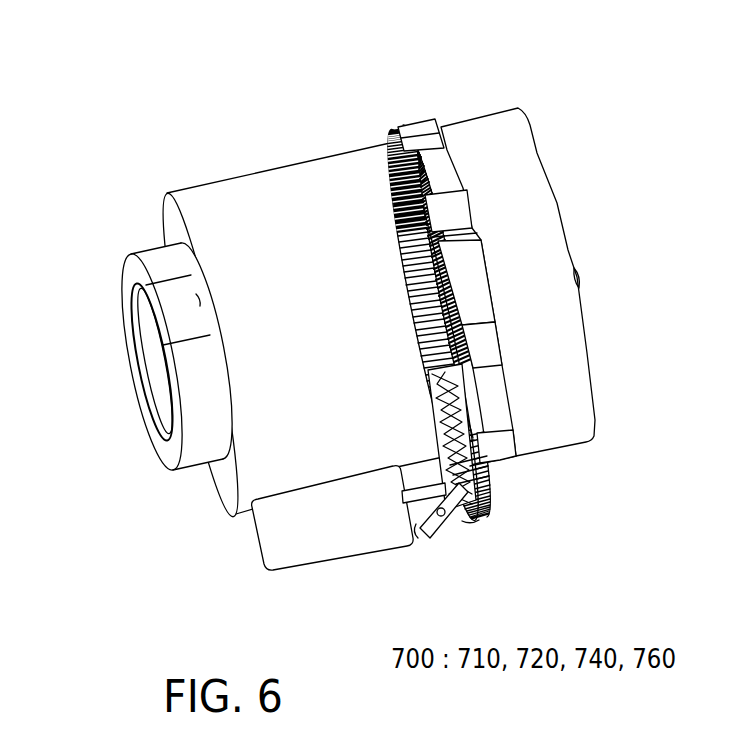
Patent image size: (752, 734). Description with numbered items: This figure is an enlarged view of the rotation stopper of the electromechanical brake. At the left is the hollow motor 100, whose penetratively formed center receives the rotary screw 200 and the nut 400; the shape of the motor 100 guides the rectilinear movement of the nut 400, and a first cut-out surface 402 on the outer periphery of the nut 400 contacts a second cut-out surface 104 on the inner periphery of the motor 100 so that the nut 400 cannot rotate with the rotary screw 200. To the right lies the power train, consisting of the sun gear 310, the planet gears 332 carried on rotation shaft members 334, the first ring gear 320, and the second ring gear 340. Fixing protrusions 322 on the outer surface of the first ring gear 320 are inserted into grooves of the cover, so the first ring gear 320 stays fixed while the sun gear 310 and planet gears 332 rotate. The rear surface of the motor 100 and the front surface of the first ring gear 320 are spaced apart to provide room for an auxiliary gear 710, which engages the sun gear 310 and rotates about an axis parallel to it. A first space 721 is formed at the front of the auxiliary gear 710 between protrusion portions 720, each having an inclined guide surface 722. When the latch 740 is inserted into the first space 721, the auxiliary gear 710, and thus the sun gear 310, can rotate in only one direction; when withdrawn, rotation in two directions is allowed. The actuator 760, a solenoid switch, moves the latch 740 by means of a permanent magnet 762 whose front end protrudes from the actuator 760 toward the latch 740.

The motor 100 is at (267, 180).
The second cut-out surface 104 is at (200, 300).
The rotary screw 200 is at (157, 375).
The sun gear 310 is at (578, 283).
The first ring gear 320 is at (432, 155).
The fixing protrusion 322 is at (460, 213).
The planet gear 332 is at (410, 293).
The rotation shaft member 334 is at (417, 320).
The second ring gear 340 is at (483, 133).
The nut 400 is at (148, 258).
The first cut-out surface 402 is at (173, 320).
The auxiliary gear 710 is at (468, 520).
The protrusion portion 720 is at (490, 487).
The first space 721 is at (437, 413).
The guide surface 722 is at (477, 447).
The latch 740 is at (437, 535).
The actuator 760 is at (335, 535).
The permanent magnet 762 is at (423, 483).